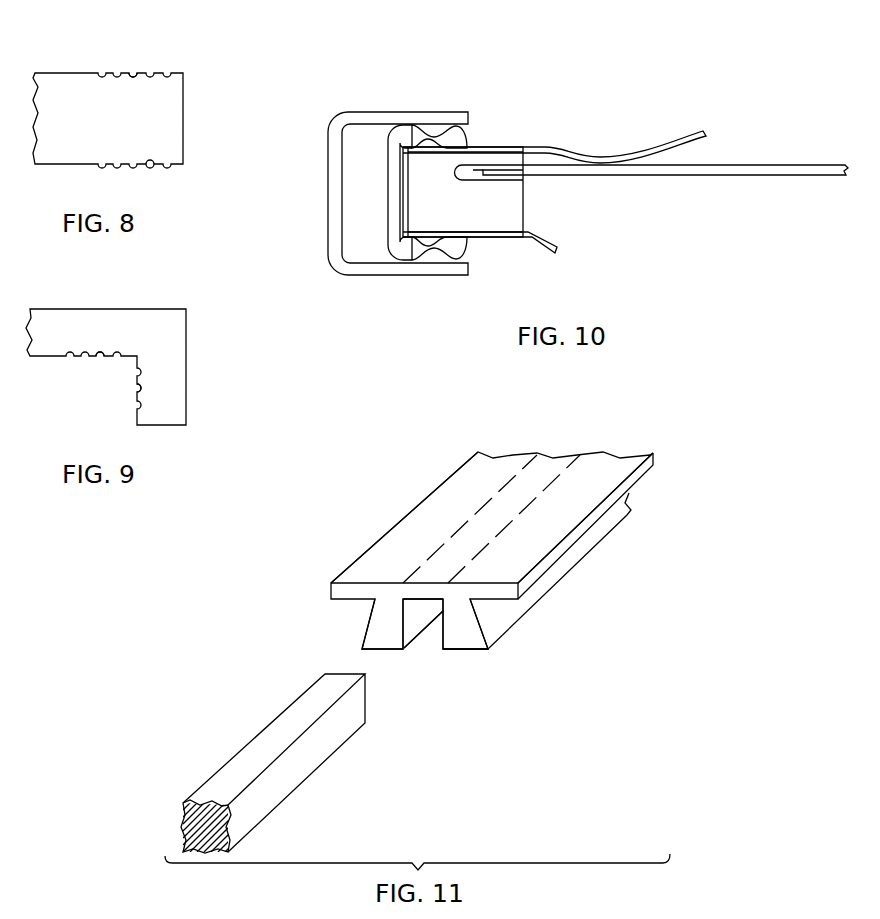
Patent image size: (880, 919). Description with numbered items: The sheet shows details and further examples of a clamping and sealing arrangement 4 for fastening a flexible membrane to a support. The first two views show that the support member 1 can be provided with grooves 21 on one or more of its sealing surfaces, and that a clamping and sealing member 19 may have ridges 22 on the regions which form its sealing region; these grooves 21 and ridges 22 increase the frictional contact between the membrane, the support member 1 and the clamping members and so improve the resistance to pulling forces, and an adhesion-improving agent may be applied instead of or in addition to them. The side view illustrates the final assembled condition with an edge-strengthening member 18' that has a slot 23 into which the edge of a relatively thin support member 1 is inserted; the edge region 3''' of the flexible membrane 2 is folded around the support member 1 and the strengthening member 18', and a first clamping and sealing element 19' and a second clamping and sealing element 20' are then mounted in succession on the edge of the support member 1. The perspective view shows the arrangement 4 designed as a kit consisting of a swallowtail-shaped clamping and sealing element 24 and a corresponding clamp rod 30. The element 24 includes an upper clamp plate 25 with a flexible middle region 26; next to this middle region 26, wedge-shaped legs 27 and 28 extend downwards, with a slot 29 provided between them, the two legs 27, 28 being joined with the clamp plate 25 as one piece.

In FIG. 8, the support member 1 is at (78, 82).
In FIG. 10, the support member 1 is at (748, 176).
In FIG. 8, the grooves 21 is at (134, 75).
In FIG. 9, the clamping and sealing member 19 is at (106, 345).
In FIG. 9, the ridges 22 is at (133, 388).
In FIG. 10, the second clamping and sealing element 20' is at (369, 193).
In FIG. 10, the first clamping and sealing element 19' is at (375, 192).
In FIG. 10, the clamping and sealing arrangement 4 is at (455, 135).
In FIG. 11, the clamping and sealing arrangement 4 is at (325, 577).
In FIG. 10, the edge-strengthening member 18' is at (498, 192).
In FIG. 10, the flexible membrane 2 is at (568, 148).
In FIG. 10, the edge region 3''' is at (480, 267).
In FIG. 10, the slot 23 is at (473, 172).
In FIG. 11, the clamp plate 25 is at (432, 510).
In FIG. 11, the flexible middle region 26 is at (558, 465).
In FIG. 11, the wedge-shaped leg 27 is at (375, 626).
In FIG. 11, the wedge-shaped leg 28 is at (468, 624).
In FIG. 11, the slot 29 is at (417, 639).
In FIG. 11, the swallowtail-shaped clamping and sealing element 24 is at (477, 655).
In FIG. 11, the clamp rod 30 is at (318, 777).